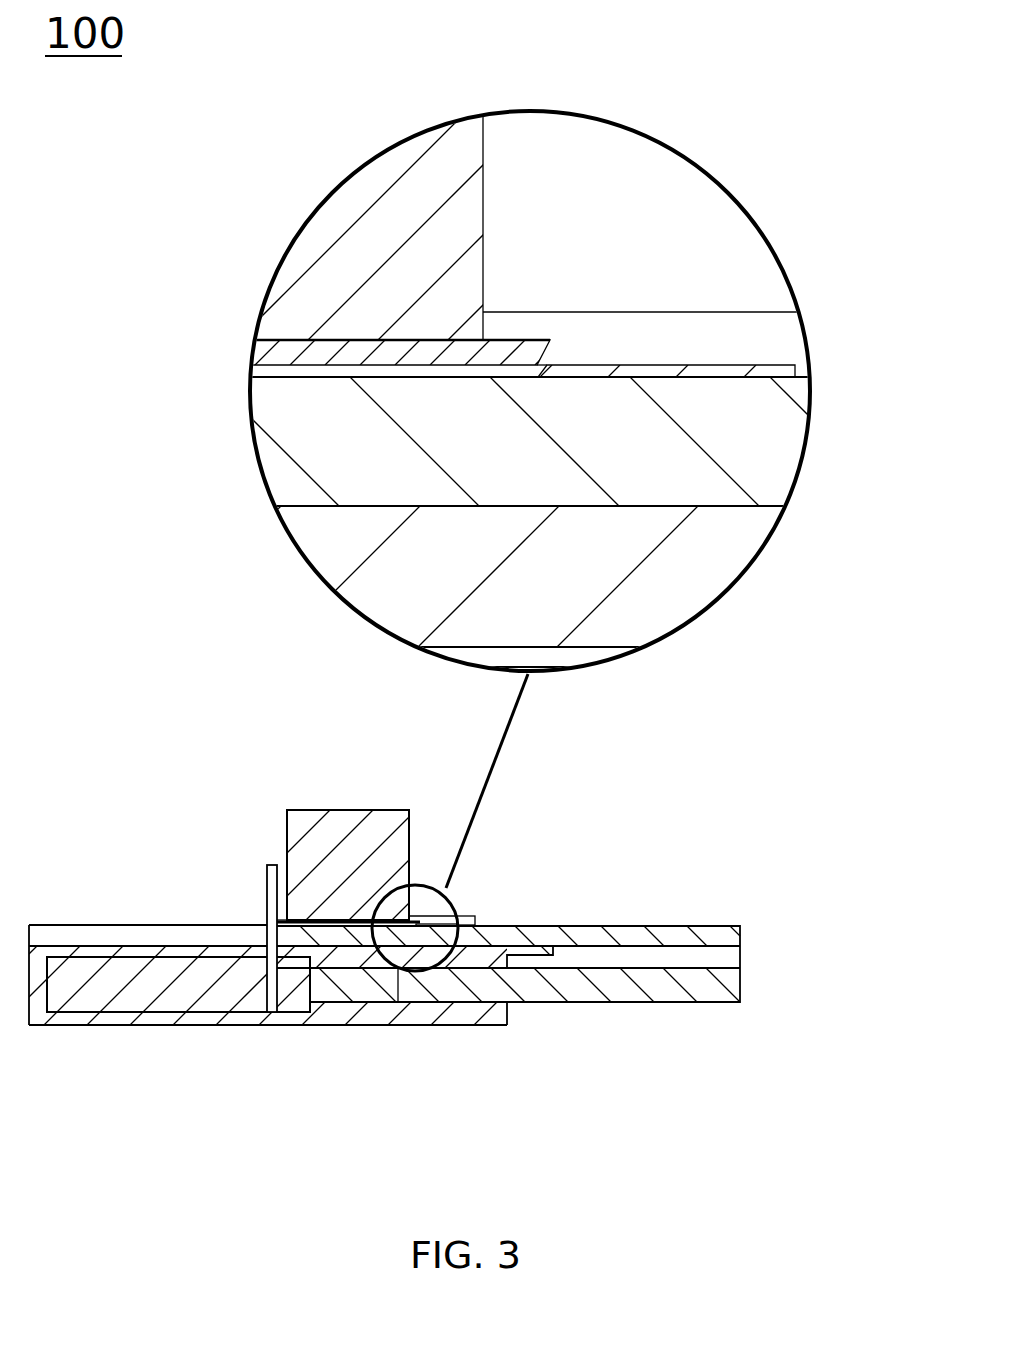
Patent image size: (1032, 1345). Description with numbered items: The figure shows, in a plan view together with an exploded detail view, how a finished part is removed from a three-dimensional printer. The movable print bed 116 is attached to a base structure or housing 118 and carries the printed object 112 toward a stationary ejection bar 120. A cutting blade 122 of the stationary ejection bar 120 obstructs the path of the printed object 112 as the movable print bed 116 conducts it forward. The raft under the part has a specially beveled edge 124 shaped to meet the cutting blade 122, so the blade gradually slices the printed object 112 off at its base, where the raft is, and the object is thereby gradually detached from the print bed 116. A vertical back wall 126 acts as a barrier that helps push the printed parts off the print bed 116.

The printed object 112 is at (360, 197).
The movable print bed 116 is at (757, 452).
The base structure or housing 118 is at (443, 1017).
The stationary ejection bar 120 is at (668, 365).
The cutting blade 122 is at (545, 371).
The beveled edge 124 is at (560, 348).
The vertical back wall 126 is at (267, 881).